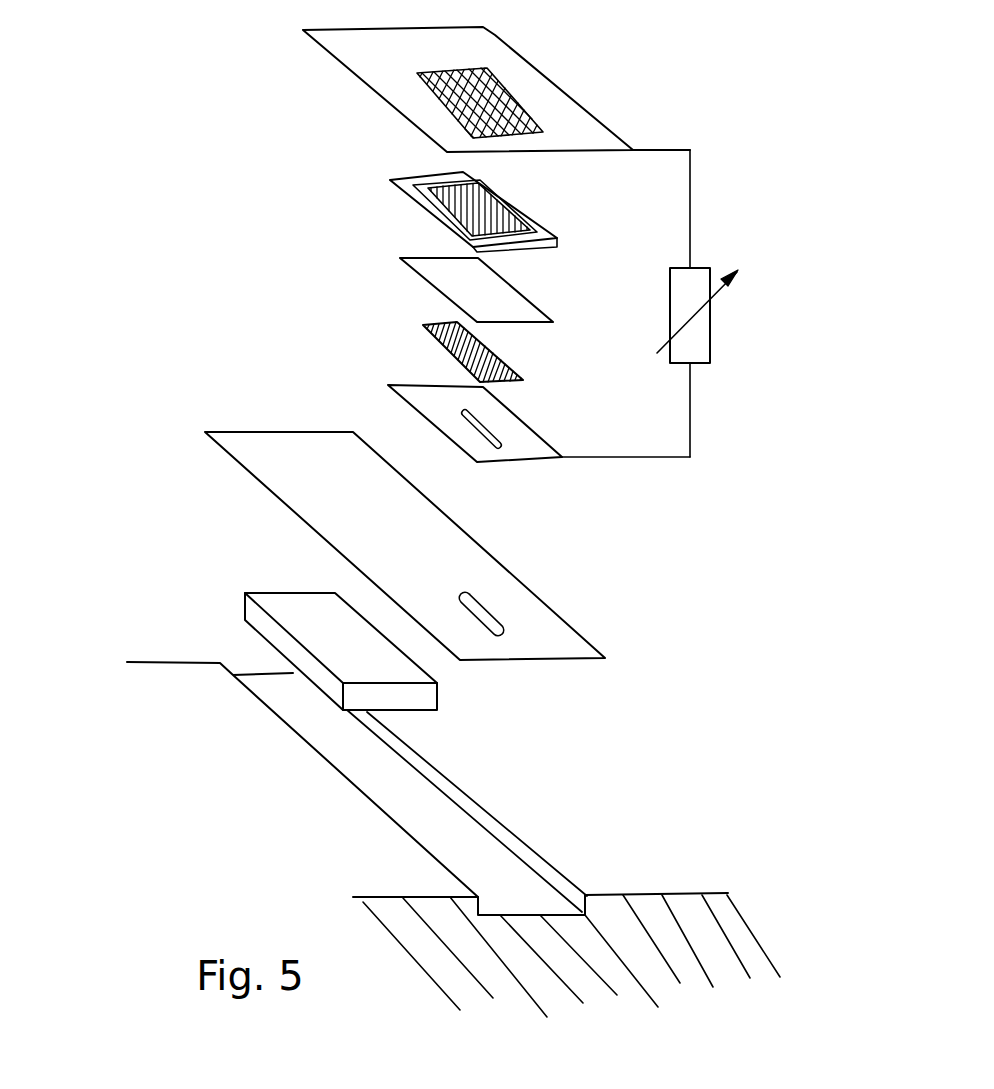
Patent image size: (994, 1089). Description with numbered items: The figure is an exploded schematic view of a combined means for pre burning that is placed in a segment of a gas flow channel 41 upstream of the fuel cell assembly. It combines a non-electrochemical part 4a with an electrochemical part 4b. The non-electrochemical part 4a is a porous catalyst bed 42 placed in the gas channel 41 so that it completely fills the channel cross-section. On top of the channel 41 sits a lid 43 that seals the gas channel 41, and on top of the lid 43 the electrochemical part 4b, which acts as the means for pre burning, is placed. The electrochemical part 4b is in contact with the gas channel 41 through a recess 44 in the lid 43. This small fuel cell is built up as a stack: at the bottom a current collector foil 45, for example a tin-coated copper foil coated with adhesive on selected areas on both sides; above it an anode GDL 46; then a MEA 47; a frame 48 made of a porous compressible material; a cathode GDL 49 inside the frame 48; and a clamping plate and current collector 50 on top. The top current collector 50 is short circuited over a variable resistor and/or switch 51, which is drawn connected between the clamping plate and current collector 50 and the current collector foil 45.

The clamping plate and current collector 50 is at (583, 118).
The frame 48 is at (390, 178).
The cathode GDL 49 is at (503, 222).
The MEA 47 is at (433, 273).
The anode GDL 46 is at (423, 325).
The current collector foil 45 is at (427, 405).
The variable resistor and/or switch 51 is at (705, 268).
The lid 43 is at (320, 502).
The recess 44 is at (488, 618).
The porous catalyst bed 42 is at (297, 620).
The gas flow channel 41 is at (470, 842).
The non-electrochemical part 4a is at (177, 768).
The electrochemical part 4b is at (283, 913).